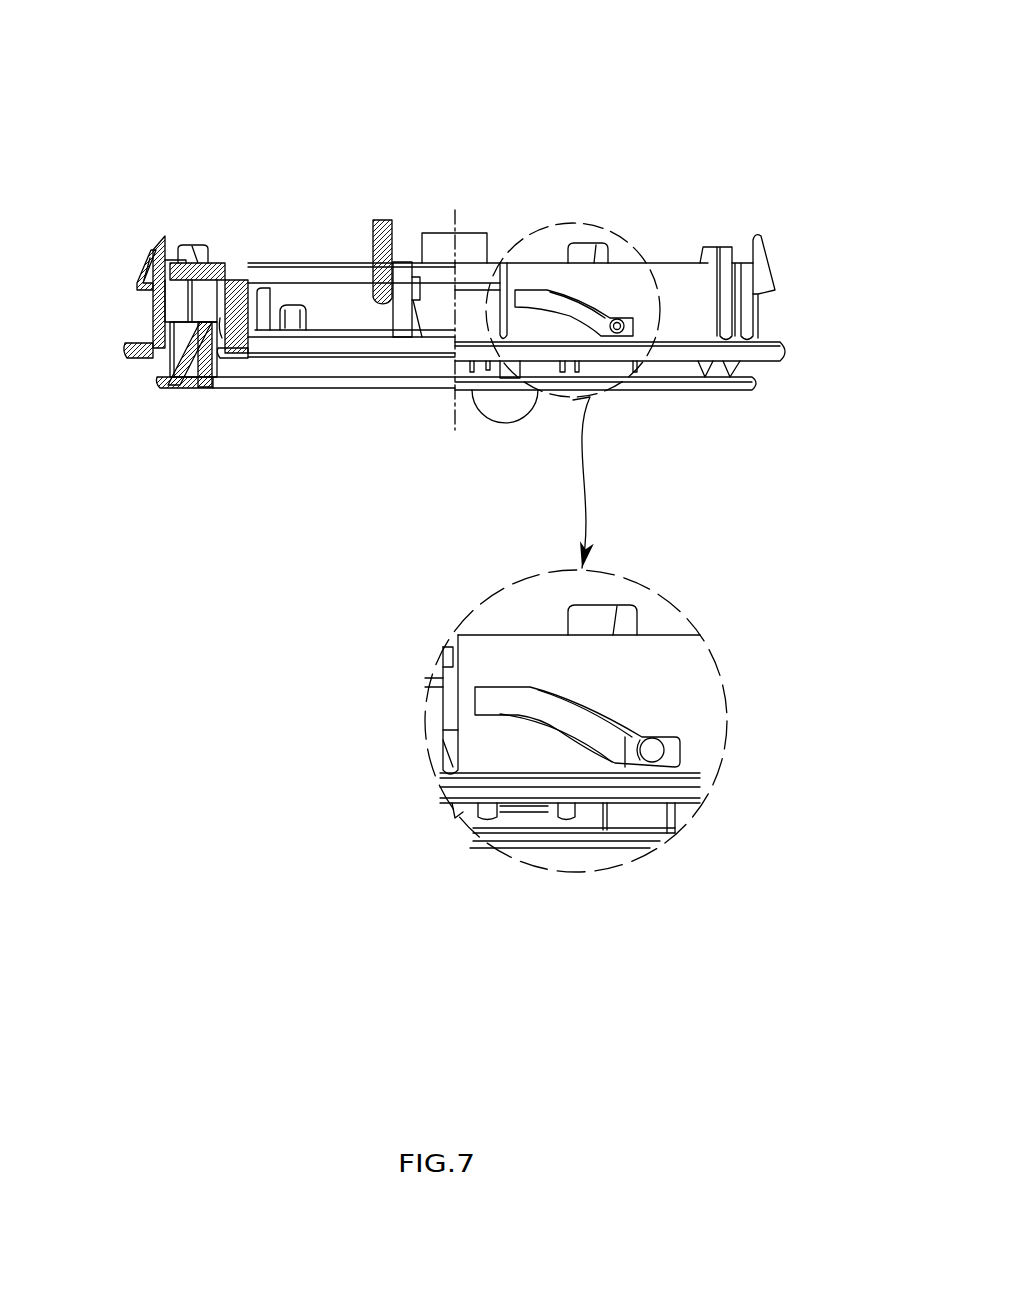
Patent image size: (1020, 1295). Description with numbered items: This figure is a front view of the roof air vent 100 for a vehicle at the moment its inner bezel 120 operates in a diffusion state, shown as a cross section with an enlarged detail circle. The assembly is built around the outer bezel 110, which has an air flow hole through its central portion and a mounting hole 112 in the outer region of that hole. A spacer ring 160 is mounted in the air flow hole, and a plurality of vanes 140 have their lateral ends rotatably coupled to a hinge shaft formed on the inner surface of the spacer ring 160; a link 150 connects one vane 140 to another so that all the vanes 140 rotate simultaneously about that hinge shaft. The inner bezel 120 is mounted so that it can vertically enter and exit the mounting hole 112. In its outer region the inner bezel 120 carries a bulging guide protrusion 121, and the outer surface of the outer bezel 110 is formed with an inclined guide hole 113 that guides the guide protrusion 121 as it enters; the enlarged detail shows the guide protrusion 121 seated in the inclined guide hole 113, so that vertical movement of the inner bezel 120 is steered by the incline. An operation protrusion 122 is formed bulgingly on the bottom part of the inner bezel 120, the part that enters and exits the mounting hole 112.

The connector assembly 100 is at (624, 122).
The outer bezel 110 is at (160, 238).
The mounting hole 112 is at (180, 312).
The guide hole 113 is at (552, 262).
The inner bezel 120 is at (683, 390).
The guide protrusion 121 is at (620, 318).
The operation protrusion 122 is at (510, 405).
The vane 140 is at (330, 342).
The link 150 is at (373, 220).
The spacer ring 160 is at (253, 262).